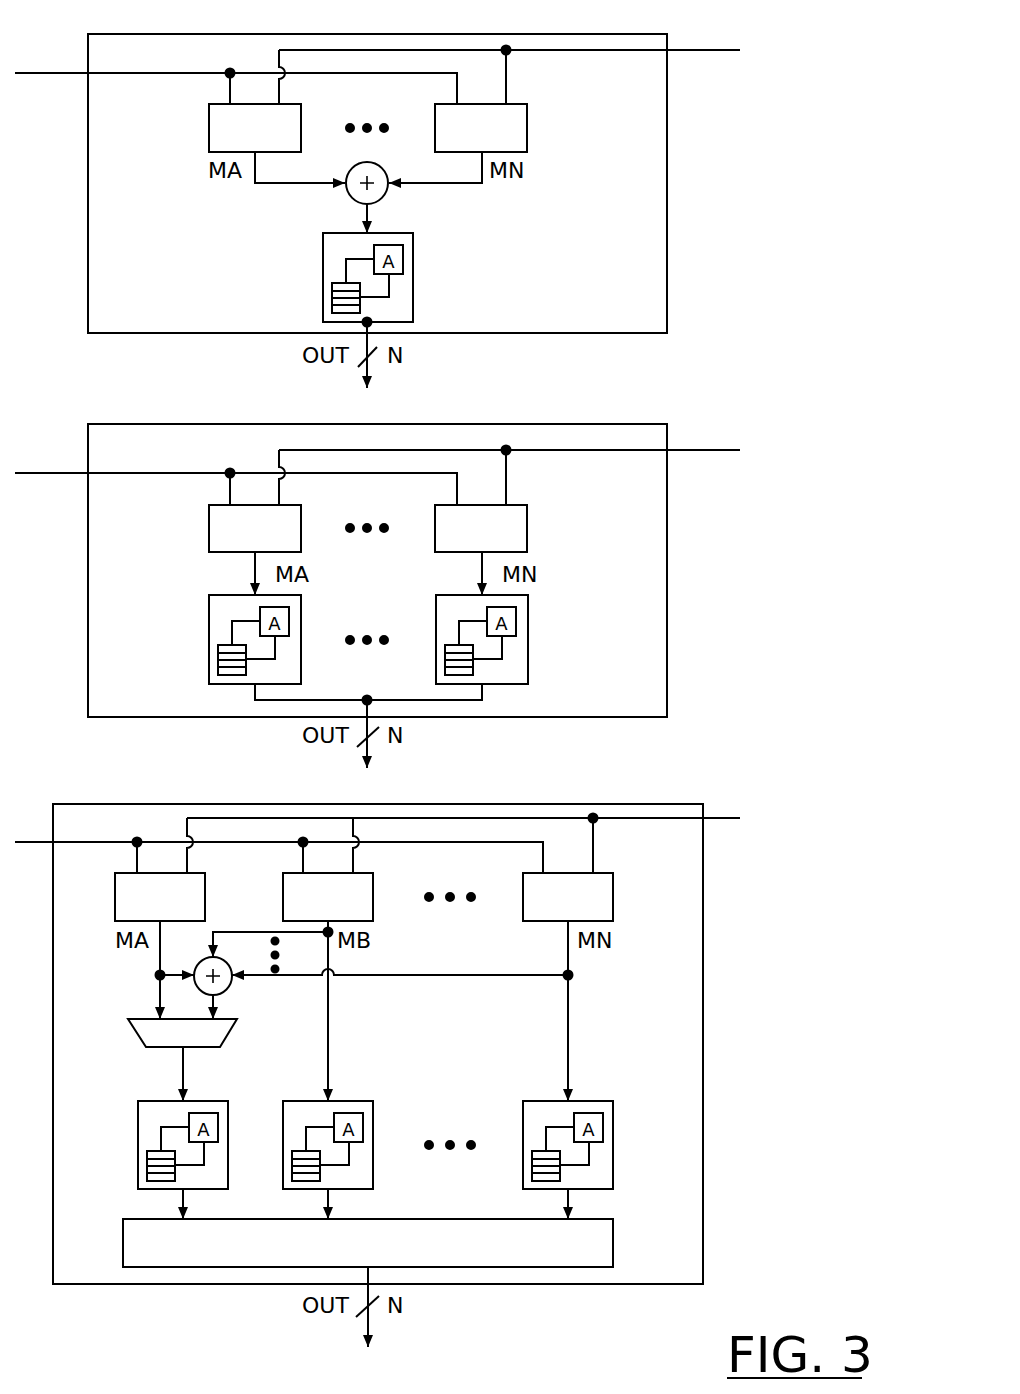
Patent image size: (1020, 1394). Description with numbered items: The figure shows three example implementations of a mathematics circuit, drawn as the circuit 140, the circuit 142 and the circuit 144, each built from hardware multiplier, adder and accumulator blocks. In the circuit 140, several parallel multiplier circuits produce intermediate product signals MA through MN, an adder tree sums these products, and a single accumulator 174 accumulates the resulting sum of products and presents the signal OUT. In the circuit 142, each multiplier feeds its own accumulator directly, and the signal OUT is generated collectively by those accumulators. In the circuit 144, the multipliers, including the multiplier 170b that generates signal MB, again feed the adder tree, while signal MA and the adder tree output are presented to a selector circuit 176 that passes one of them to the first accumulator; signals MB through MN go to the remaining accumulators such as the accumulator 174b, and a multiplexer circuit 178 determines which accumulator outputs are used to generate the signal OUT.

The mathematics circuit implementation 140 is at (170, 33).
The mathematics circuit implementation 142 is at (170, 423).
The mathematics circuit implementation 144 is at (168, 803).
The multiplier circuit 170b is at (373, 901).
The accumulator circuit 174 is at (413, 288).
The accumulator circuit 174b is at (301, 1100).
The selector circuit 176 is at (150, 1018).
The output multiplexer circuit 178 is at (138, 1218).